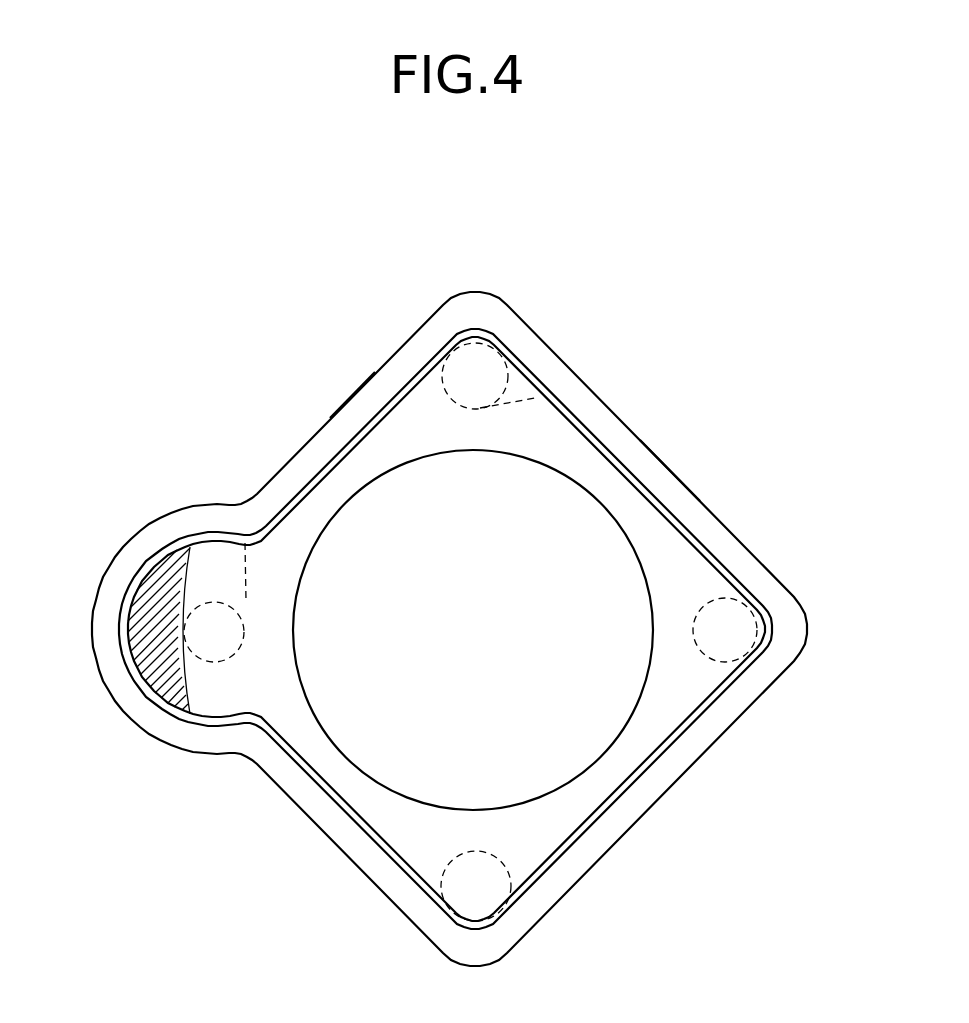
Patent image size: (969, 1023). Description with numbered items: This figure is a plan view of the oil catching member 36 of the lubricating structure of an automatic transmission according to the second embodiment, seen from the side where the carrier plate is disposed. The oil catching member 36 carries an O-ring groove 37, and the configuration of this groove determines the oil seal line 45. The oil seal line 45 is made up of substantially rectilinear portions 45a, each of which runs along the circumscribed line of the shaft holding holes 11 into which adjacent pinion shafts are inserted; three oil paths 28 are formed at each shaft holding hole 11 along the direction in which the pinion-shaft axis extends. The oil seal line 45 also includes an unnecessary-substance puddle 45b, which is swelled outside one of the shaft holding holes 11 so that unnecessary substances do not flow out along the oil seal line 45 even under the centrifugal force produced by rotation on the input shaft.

The shaft holding hole 11 is at (530, 400).
The oil path 28 is at (452, 343).
The oil catching member 36 is at (655, 447).
The O-ring groove 37 is at (668, 510).
The oil seal line 45 is at (700, 540).
The rectilinear portion 45a is at (350, 433).
The unnecessary-substance puddle 45b is at (147, 604).